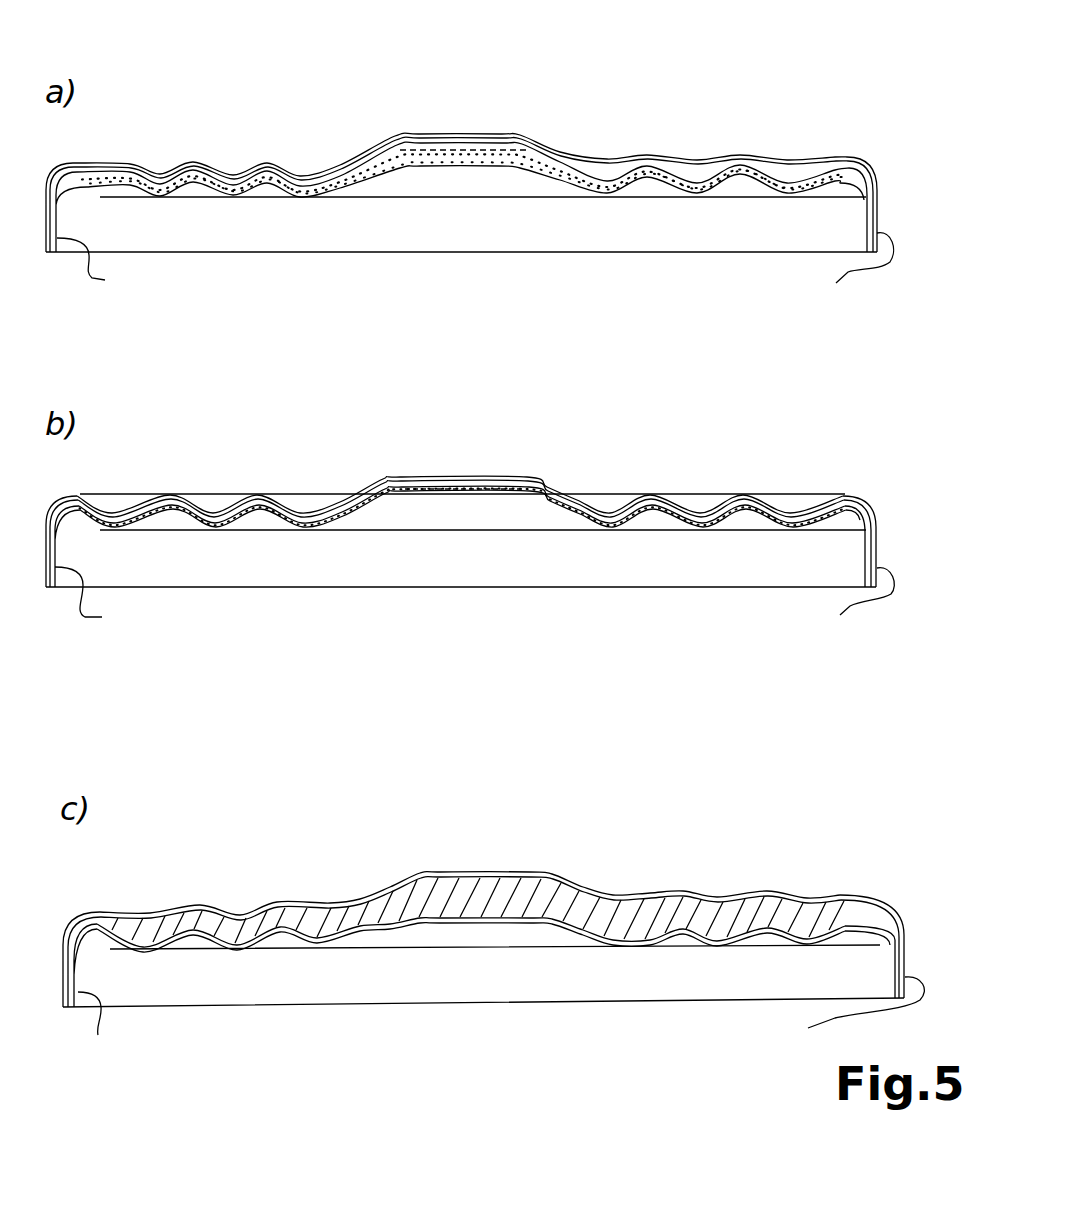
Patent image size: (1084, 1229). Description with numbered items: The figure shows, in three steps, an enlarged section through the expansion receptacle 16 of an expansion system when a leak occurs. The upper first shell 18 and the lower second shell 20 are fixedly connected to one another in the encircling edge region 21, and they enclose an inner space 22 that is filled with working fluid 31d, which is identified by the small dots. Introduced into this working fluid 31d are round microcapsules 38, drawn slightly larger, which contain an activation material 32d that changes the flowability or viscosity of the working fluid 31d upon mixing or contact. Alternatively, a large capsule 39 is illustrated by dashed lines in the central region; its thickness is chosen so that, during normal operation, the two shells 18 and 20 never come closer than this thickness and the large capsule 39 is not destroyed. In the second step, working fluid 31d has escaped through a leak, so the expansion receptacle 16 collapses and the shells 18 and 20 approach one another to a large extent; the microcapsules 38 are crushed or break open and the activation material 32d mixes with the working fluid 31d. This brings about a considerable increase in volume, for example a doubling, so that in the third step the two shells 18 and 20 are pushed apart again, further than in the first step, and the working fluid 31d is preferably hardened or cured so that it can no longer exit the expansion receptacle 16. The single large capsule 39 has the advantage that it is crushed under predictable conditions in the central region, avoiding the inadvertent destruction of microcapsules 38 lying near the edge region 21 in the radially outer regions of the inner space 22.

The expansion receptacle 16 is at (614, 68).
The upper first shell 18 is at (353, 147).
The lower second shell 20 is at (285, 183).
The encircling edge region 21 is at (489, 654).
The inner space 22 is at (549, 155).
The working fluid 31d is at (284, 168).
The activation material 32d is at (316, 173).
The microcapsules 38 is at (568, 185).
The large capsule 39 is at (415, 147).